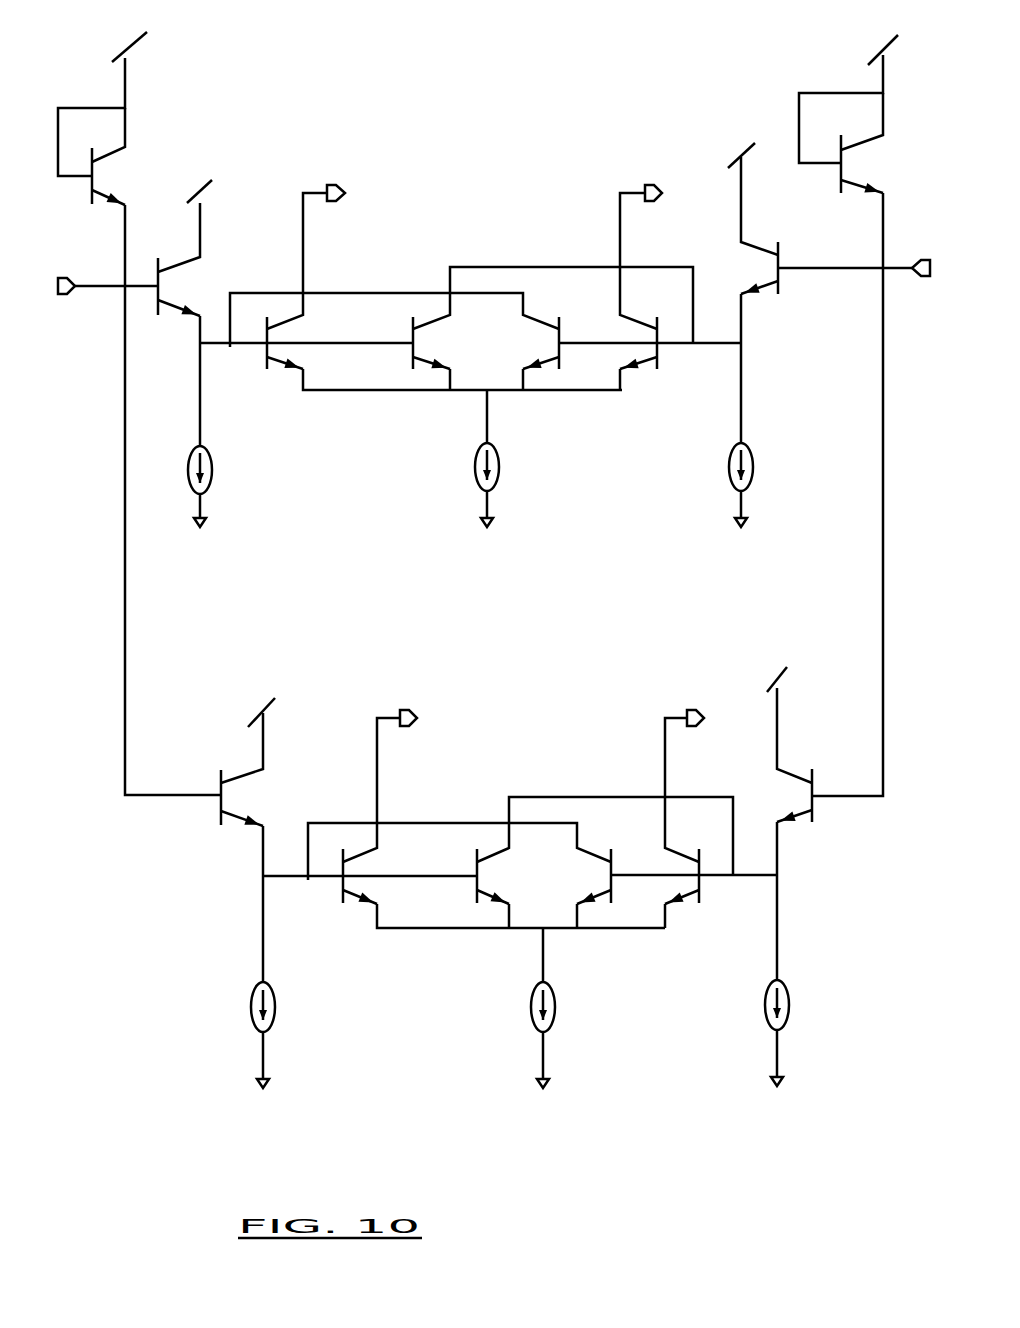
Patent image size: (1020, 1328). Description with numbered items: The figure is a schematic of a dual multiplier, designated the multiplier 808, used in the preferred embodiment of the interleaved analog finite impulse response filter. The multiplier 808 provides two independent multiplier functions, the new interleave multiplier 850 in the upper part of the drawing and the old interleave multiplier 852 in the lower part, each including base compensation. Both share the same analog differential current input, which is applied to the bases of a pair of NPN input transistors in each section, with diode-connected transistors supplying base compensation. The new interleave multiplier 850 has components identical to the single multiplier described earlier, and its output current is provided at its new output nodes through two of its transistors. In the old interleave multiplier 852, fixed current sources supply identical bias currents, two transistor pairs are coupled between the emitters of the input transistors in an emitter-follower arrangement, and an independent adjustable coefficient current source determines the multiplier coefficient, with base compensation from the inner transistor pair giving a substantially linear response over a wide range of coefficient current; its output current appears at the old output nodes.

The multiplier 808 is at (498, 593).
The new interleave multiplier 850 is at (568, 145).
The old interleave multiplier 852 is at (599, 660).